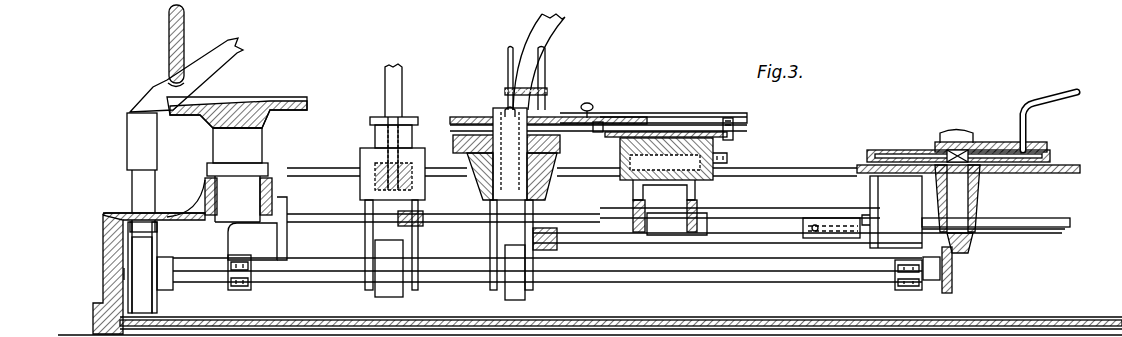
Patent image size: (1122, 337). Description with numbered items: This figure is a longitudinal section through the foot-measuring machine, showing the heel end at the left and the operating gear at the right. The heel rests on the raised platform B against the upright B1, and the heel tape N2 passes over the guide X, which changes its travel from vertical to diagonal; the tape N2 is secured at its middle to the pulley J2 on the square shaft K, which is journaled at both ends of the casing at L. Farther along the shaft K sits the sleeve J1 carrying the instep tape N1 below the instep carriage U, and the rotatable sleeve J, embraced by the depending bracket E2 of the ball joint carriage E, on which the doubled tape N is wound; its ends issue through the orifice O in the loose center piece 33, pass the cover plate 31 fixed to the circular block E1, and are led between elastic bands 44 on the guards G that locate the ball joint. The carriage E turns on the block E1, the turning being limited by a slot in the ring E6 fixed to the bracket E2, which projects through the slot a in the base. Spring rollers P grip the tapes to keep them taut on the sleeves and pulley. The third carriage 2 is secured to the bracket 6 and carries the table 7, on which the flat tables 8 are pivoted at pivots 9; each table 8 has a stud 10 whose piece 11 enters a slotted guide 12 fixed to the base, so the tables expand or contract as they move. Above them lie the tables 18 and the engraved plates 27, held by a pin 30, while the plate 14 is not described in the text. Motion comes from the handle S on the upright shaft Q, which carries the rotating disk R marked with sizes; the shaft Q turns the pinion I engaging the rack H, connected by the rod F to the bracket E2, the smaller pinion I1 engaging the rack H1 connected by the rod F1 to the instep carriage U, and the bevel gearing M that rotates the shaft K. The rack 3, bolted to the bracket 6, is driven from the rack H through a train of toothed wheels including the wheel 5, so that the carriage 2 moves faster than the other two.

The upright B1 is at (169, 50).
The tape N2 is at (215, 60).
The raised platform B is at (266, 100).
The guide X is at (142, 141).
The tape N1 is at (390, 100).
The instep carriage U is at (365, 160).
The slot a is at (300, 175).
The spring rollers P is at (115, 216).
The shaft K is at (338, 260).
The pulley J2 is at (147, 289).
The journals L is at (243, 288).
The sleeve J1 is at (393, 290).
The rotatable sleeve J is at (517, 290).
The plate 14 is at (478, 130).
The center piece 33 is at (495, 117).
The orifice O is at (504, 145).
The tape measure N is at (533, 47).
The guards G is at (540, 70).
The elastic bands 44 is at (543, 92).
The sliding carriage E is at (453, 150).
The ring E6 is at (552, 140).
The circular block E1 is at (480, 177).
The depending bracket E2 is at (542, 170).
The cover plate 31 is at (603, 122).
The stud 10 is at (613, 140).
The plates 27 is at (677, 123).
The pin 30 is at (727, 120).
The tables 18 is at (733, 123).
The flat tables 8 is at (737, 128).
The pivots 9 is at (738, 132).
The table 7 is at (737, 137).
The third sliding carriage 2 is at (717, 150).
The slotted guide 12 is at (727, 157).
The bracket 6 is at (693, 173).
The piece 11 is at (612, 153).
The rod F1 is at (597, 217).
The rod F is at (615, 237).
The rack 3 is at (760, 237).
The toothed wheel 5 is at (818, 237).
The rotating disk R is at (897, 152).
The upright shaft Q is at (991, 181).
The handle S is at (1057, 97).
The pinion I1 is at (983, 222).
The rack H1 is at (1040, 222).
The pinion I is at (985, 227).
The rack H is at (1037, 232).
The bevel gearing M is at (952, 287).